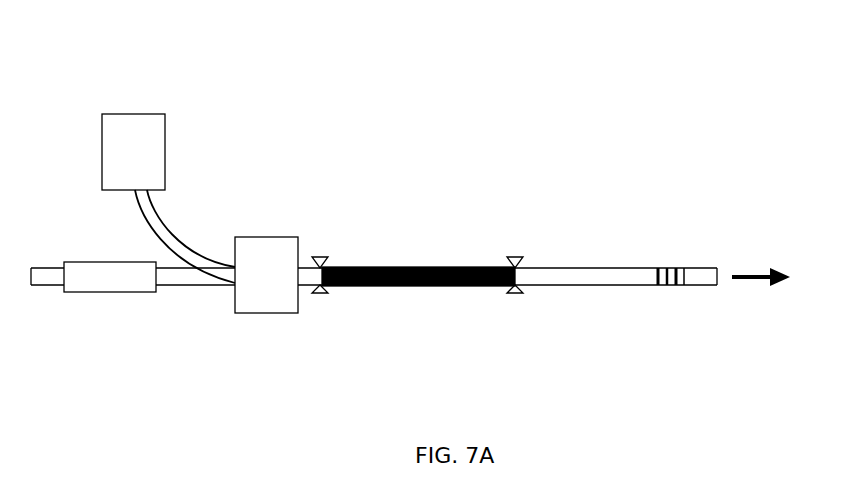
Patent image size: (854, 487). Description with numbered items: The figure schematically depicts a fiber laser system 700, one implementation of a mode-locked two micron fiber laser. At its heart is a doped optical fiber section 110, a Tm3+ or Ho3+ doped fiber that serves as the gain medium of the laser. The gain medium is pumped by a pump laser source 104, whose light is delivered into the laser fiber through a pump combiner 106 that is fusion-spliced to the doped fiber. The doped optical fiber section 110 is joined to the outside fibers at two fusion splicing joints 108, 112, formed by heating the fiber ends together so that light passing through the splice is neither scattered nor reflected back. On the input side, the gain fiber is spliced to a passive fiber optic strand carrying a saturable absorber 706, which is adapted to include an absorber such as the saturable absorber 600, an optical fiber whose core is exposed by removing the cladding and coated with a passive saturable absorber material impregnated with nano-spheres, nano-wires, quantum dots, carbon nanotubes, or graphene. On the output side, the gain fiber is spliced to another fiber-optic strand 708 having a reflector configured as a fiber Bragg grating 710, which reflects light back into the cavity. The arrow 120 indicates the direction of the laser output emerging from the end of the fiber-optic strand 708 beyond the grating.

The pump laser source 104 is at (117, 162).
The pump combiner 106 is at (250, 286).
The fusion splicing joint 108 is at (320, 257).
The doped optical fiber section 110 is at (439, 266).
The fusion splicing joint 112 is at (515, 257).
The direction of insertion 120 is at (750, 272).
The saturable absorber 600 is at (115, 281).
The fiber laser system 700 is at (469, 62).
The saturable absorber 706 is at (186, 340).
The fiber-optic strand 708 is at (603, 322).
The fiber Bragg grating 710 is at (639, 295).